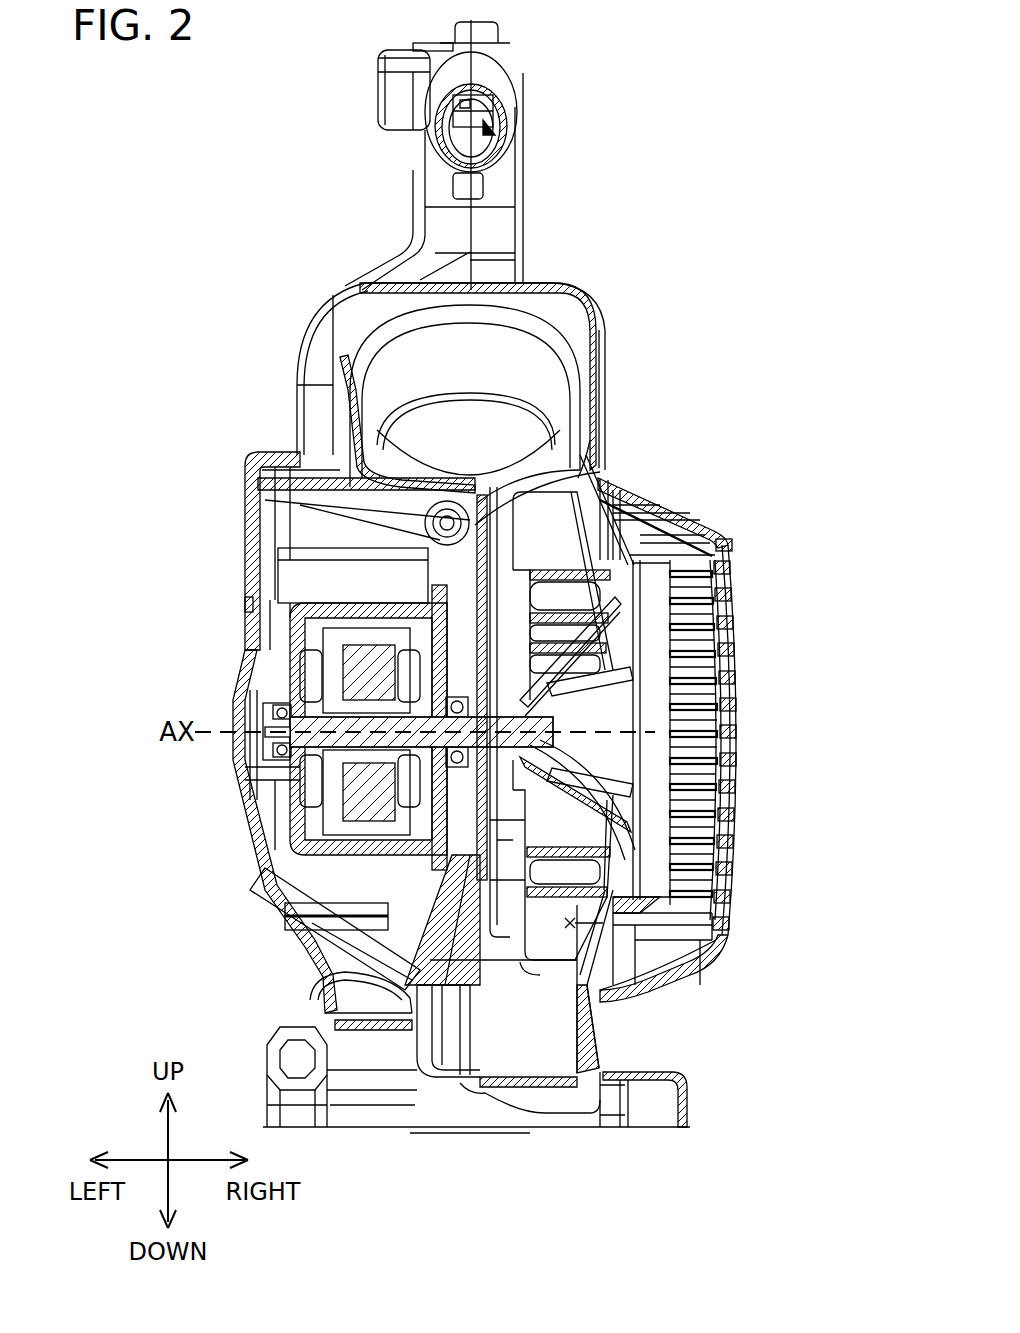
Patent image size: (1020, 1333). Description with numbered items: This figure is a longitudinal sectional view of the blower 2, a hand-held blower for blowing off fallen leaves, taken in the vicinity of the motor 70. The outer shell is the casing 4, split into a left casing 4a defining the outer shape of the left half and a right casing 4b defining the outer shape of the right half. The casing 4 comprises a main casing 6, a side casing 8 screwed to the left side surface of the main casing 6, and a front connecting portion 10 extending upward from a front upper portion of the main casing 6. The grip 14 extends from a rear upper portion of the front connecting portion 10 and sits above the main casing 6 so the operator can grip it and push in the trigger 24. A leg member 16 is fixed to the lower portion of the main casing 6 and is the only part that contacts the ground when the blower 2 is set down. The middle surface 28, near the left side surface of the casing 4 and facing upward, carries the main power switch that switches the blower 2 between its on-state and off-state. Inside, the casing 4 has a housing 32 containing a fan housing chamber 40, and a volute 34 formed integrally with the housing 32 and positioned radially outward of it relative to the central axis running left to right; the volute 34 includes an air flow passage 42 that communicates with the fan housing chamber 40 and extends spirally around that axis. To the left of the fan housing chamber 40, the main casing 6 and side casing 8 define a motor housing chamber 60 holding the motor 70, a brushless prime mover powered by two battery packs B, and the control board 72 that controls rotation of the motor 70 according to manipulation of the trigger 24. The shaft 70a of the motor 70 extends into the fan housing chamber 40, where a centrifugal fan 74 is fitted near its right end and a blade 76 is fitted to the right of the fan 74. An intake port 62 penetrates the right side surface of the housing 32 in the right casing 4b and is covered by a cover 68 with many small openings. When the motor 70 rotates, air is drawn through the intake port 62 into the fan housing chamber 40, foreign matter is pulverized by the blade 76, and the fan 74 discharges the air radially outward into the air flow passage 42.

The blower 2 is at (722, 128).
The casing 4 is at (629, 383).
The left casing 4a is at (372, 292).
The right casing 4b is at (580, 293).
The main casing 6 is at (590, 337).
The side casing 8 is at (250, 502).
The front connecting portion 10 is at (497, 233).
The grip 14 is at (478, 130).
The leg member 16 is at (680, 1112).
The trigger 24 is at (468, 187).
The middle surface 28 is at (263, 450).
The housing 32 is at (615, 542).
The volute 34 is at (598, 435).
The fan housing chamber 40 is at (700, 950).
The air flow passage 42 is at (530, 1006).
The motor housing chamber 60 is at (345, 875).
The intake port 62 is at (655, 882).
The cover 68 is at (728, 542).
The motor 70 is at (330, 815).
The shaft 70a is at (320, 740).
The control board 72 is at (302, 578).
The fan 74 is at (612, 632).
The blade 76 is at (635, 805).
The battery packs B is at (335, 985).